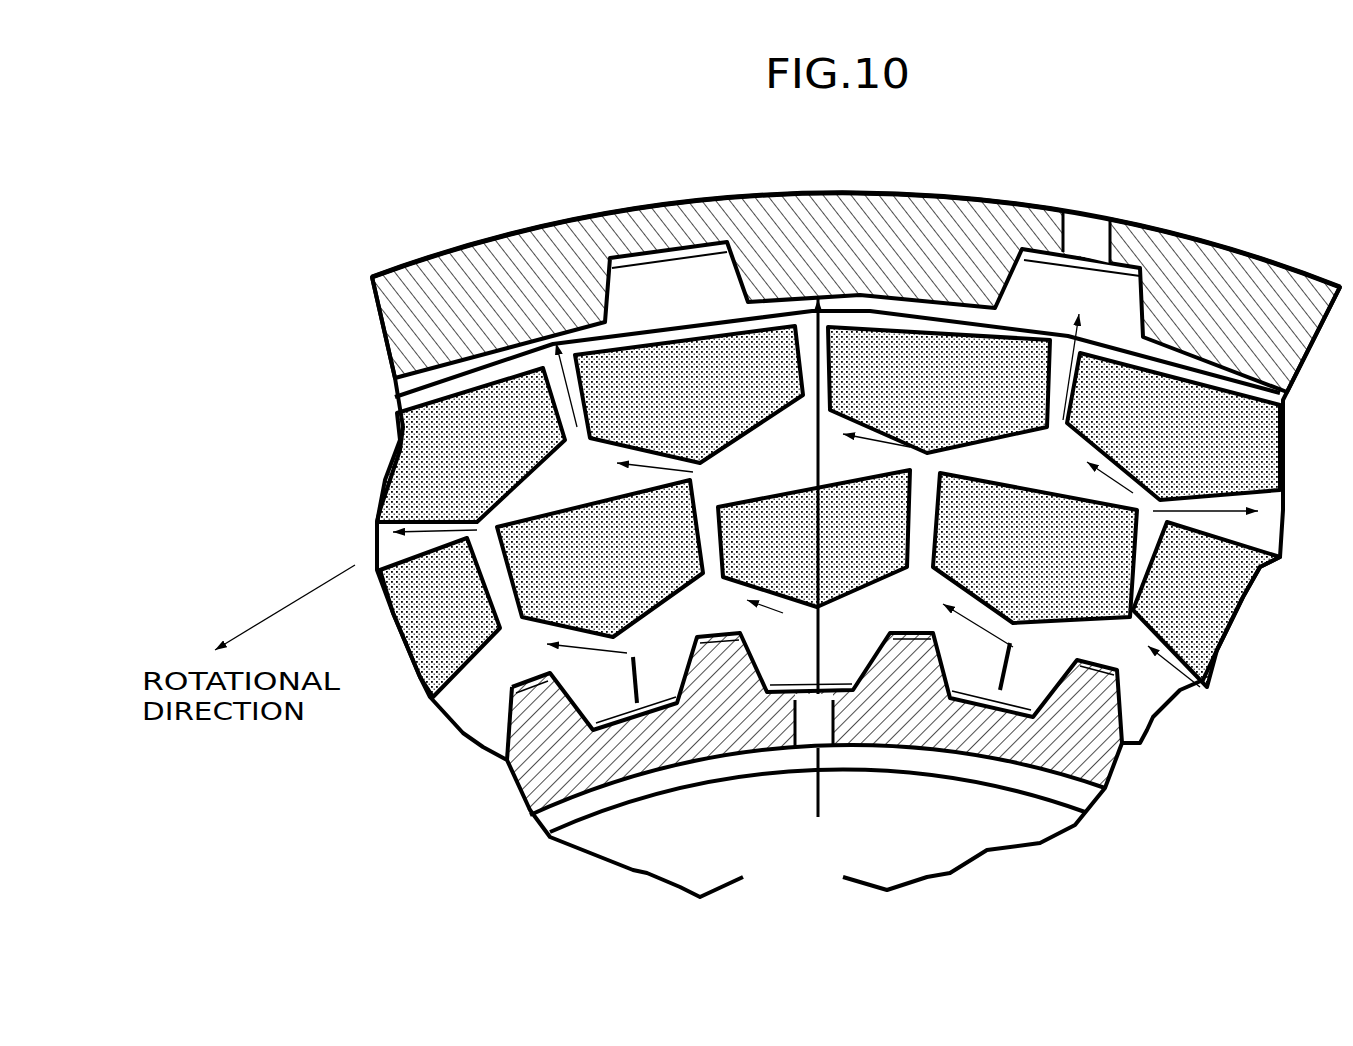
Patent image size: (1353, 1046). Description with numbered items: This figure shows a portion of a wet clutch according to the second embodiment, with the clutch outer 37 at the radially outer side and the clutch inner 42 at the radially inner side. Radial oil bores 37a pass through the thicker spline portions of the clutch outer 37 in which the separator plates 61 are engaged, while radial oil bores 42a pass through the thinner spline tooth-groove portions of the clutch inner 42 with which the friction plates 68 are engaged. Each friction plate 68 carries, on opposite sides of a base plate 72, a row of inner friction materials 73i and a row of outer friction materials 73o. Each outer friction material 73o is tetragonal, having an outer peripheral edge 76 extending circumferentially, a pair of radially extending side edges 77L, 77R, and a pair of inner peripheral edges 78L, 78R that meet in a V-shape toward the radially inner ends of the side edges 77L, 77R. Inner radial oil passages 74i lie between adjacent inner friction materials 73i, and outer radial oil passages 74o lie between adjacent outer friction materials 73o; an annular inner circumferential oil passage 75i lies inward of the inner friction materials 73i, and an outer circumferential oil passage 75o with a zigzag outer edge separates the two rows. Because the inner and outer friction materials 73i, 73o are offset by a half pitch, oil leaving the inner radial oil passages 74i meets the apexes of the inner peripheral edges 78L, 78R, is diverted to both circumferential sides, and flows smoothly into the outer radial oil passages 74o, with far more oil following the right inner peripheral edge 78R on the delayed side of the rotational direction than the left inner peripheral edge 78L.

The clutch outer 37 is at (856, 245).
The oil bore 37a is at (1070, 240).
The separator plate 61 is at (677, 275).
The friction plate 68 is at (651, 312).
The base plate 72 is at (1032, 327).
The outer friction material 73o is at (726, 404).
The inner friction material 73i is at (637, 566).
The outer radial oil passage 74o is at (578, 390).
The inner radial oil passage 74i is at (503, 565).
The outer circumferential oil passage 75o is at (592, 472).
The inner circumferential oil passage 75i is at (565, 636).
The outer peripheral edge 76 is at (926, 326).
The left side edge 77L is at (830, 373).
The right side edge 77R is at (1047, 383).
The left inner peripheral edge 78L is at (875, 433).
The right inner peripheral edge 78R is at (970, 445).
The clutch inner 42 is at (814, 745).
The oil bore 42a is at (803, 731).